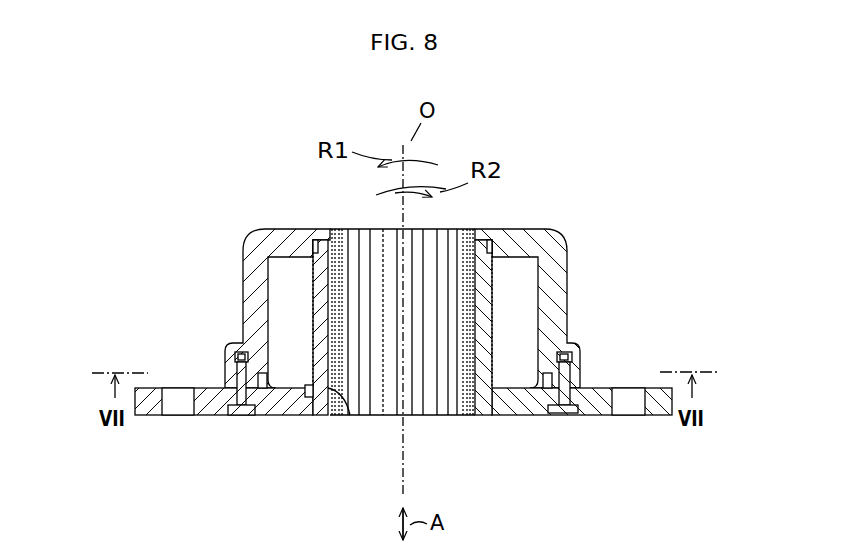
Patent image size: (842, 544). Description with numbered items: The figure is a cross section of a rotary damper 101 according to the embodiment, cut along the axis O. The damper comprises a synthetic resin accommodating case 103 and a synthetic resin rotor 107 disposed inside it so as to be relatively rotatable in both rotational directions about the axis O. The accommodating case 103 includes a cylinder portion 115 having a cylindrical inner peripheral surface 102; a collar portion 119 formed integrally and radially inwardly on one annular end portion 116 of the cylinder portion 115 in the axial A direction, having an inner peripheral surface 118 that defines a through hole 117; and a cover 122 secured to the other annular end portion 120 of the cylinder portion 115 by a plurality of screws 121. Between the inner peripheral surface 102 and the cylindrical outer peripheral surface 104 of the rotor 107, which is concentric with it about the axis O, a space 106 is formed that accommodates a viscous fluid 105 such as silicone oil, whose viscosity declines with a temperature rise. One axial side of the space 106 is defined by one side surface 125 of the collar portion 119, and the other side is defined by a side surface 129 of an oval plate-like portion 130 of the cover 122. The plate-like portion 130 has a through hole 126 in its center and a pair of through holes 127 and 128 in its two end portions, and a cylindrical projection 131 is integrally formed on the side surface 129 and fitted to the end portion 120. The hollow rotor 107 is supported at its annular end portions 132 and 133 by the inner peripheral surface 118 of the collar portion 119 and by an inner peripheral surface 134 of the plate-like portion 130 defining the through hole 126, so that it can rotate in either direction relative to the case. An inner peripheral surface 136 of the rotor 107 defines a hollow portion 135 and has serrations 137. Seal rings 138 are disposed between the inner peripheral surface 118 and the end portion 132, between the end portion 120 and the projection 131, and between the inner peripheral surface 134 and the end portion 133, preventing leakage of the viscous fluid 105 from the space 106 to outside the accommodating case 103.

The rotary damper 101 is at (575, 230).
The cylindrical inner peripheral surface 102 is at (530, 308).
The accommodating case 103 is at (242, 250).
The cylindrical outer peripheral surface 104 is at (525, 412).
The viscous fluid 105 is at (295, 365).
The space 106 is at (545, 246).
The rotor 107 is at (323, 292).
The cylinder portion 115 is at (250, 336).
The one annular end portion 116 is at (563, 268).
The through hole 117 is at (317, 243).
The inner peripheral surface 118 is at (488, 242).
The collar portion 119 is at (270, 243).
The other annular end portion 120 is at (574, 369).
The screws 121 is at (262, 386).
The cover 122 is at (208, 418).
The one side surface 125 is at (522, 270).
The through hole 126 is at (480, 408).
The through hole 127 is at (178, 405).
The through hole 128 is at (632, 413).
The side surface 129 is at (283, 395).
The plate-like portion 130 is at (603, 412).
The cylindrical projection 131 is at (573, 349).
The annular end portion 132 is at (328, 242).
The annular end portion 133 is at (338, 405).
The inner peripheral surface 134 is at (326, 412).
The hollow portion 135 is at (432, 405).
The inner peripheral surface 136 is at (392, 415).
The serrations 137 is at (442, 410).
The seal rings 138 is at (316, 240).